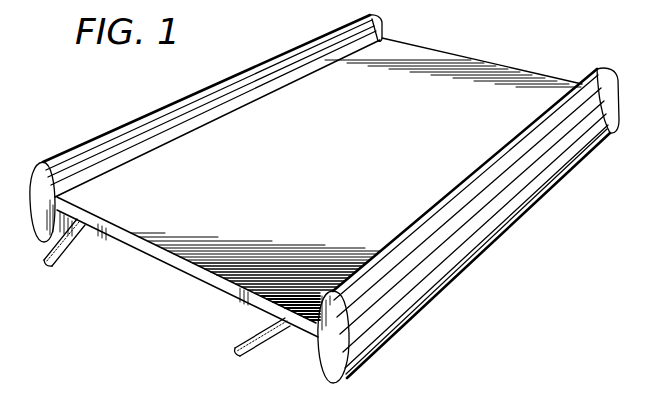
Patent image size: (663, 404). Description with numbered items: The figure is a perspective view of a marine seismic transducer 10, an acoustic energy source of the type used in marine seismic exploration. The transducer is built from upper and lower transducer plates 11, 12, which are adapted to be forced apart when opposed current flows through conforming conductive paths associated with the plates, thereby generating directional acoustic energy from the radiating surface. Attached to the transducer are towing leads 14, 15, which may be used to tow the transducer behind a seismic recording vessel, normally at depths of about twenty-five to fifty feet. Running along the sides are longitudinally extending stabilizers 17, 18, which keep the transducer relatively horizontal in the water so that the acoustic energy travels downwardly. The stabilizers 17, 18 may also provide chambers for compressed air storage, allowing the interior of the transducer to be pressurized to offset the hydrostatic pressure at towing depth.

The web support apparatus 10 is at (144, 108).
The upper transducer plate 11 is at (101, 221).
The lower transducer plate 12 is at (138, 264).
The towing lead 14 is at (55, 268).
The towing lead 15 is at (243, 355).
The stabilizer 17 is at (68, 150).
The stabilizer 18 is at (437, 291).